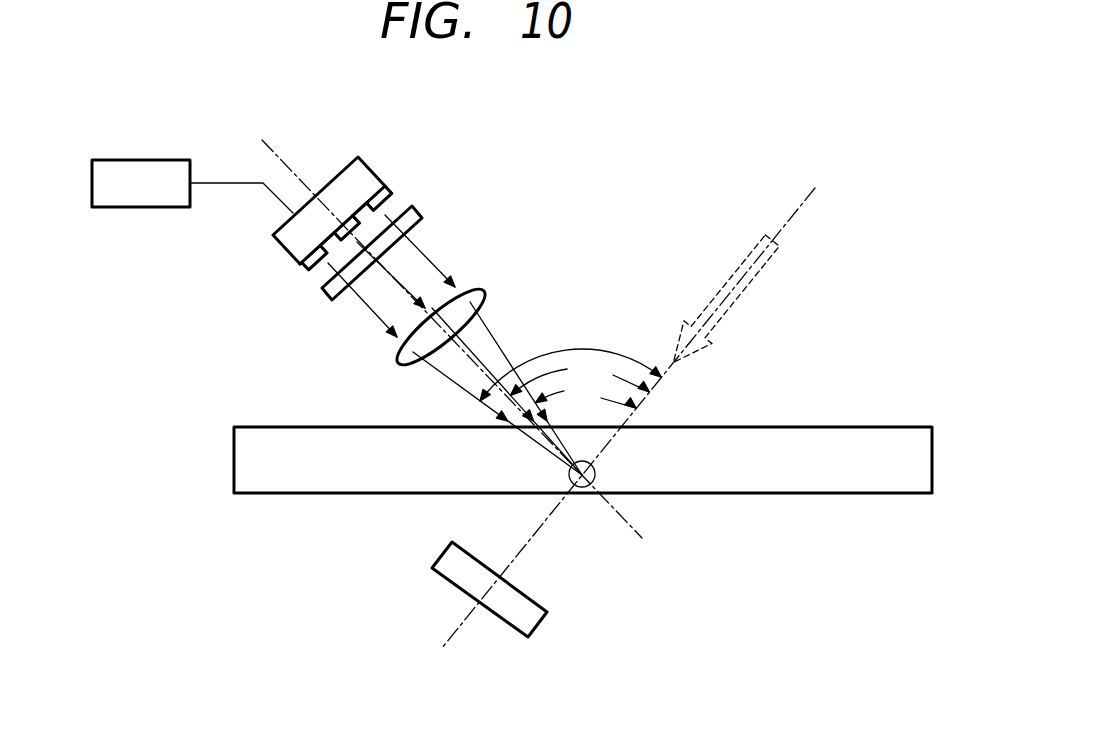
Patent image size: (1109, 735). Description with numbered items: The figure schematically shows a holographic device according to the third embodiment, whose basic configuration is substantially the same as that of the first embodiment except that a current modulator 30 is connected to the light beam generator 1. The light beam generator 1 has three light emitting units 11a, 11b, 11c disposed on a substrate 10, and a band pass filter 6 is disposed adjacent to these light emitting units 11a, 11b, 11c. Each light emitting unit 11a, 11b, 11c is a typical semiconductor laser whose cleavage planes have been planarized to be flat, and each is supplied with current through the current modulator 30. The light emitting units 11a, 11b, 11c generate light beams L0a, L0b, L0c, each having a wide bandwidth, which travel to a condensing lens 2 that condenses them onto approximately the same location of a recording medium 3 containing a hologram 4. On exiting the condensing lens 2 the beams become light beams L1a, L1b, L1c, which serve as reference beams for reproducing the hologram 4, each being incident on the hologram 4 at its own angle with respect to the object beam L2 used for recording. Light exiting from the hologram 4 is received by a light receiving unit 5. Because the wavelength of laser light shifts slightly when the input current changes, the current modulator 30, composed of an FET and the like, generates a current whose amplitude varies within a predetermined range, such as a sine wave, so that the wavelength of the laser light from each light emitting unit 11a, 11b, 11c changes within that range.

The light beam generator 1 is at (365, 163).
The substrate 10 is at (390, 190).
The light emitting unit 11a is at (387, 200).
The light emitting unit 11b is at (318, 261).
The light emitting unit 11c is at (350, 232).
The band pass filter 6 is at (320, 292).
The condensing lens 2 is at (484, 289).
The recording medium 3 is at (263, 496).
The hologram 4 is at (597, 472).
The light receiving unit 5 is at (544, 618).
The current modulator 30 is at (103, 160).
The light beam L0a is at (424, 252).
The light beam L0b is at (375, 262).
The light beam L0c is at (367, 308).
The light beam L1a is at (507, 355).
The light beam L1b is at (490, 335).
The light beam L1c is at (437, 370).
The object beam L2 is at (762, 268).